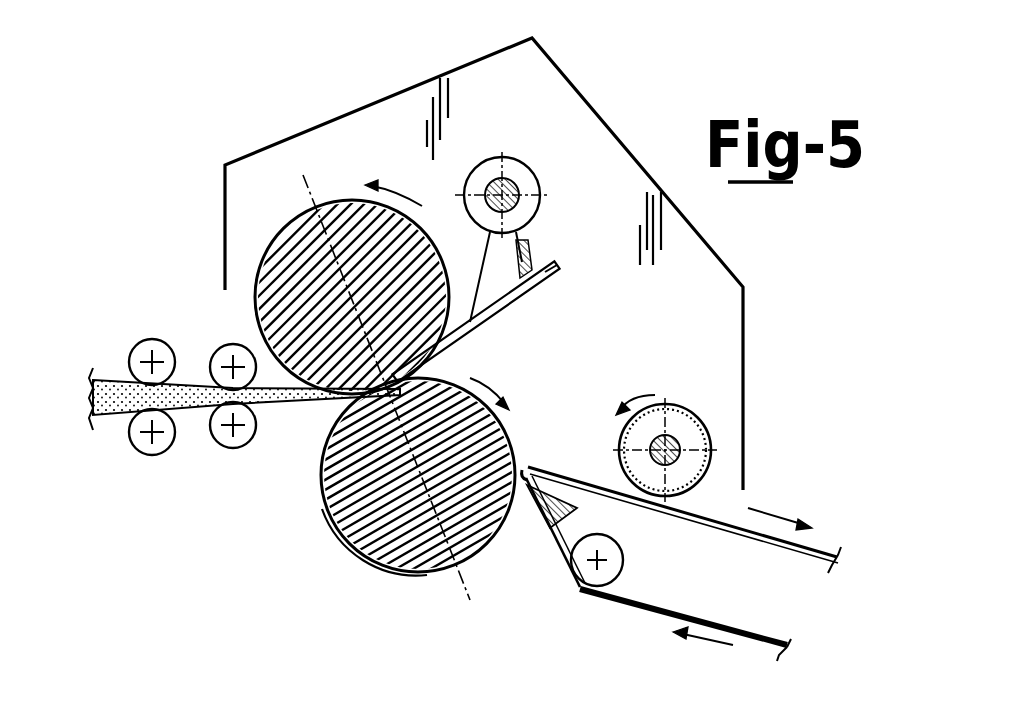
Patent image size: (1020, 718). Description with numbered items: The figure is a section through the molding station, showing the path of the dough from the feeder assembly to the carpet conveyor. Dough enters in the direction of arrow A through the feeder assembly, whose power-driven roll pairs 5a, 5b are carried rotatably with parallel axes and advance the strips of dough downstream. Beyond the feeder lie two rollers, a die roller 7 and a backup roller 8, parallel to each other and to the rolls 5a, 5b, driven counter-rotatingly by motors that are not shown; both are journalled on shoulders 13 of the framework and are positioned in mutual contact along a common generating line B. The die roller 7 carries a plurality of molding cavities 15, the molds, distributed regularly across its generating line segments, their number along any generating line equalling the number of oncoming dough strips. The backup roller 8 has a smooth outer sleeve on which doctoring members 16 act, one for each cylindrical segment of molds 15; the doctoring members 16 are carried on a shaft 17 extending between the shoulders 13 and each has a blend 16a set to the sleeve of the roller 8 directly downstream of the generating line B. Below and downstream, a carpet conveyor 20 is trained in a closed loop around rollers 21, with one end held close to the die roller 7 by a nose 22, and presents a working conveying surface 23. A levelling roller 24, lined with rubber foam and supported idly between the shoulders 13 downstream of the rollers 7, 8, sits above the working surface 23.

The power driven roller pair 5a is at (152, 339).
The power driven roller pair 5b is at (152, 455).
The die roller 7 is at (370, 548).
The backup roller 8 is at (352, 200).
The shoulders 13 is at (540, 77).
The molding cavities 15 is at (326, 505).
The doctoring members 16 is at (523, 248).
The blend 16a is at (528, 300).
The shaft 17 is at (514, 183).
The carpet conveyor 20 is at (657, 617).
The rollers 21 is at (583, 585).
The nose 22 is at (540, 533).
The working conveying surface 23 is at (735, 520).
The levelling roller 24 is at (683, 402).
The feed direction A is at (95, 343).
The common generating line B is at (440, 366).